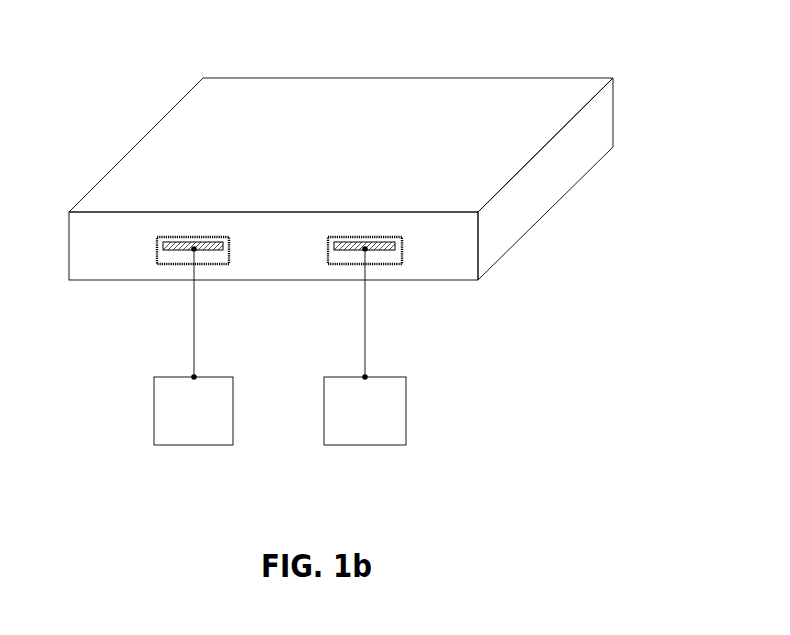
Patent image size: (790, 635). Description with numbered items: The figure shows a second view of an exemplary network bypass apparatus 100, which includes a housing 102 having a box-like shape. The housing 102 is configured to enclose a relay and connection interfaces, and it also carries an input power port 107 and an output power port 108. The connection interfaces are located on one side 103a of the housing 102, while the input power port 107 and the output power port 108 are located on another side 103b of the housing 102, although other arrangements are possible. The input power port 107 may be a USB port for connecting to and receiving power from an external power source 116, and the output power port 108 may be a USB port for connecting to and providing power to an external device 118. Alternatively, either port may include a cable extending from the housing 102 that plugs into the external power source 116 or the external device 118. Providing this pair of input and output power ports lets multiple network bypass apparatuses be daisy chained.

The network bypass apparatus 100 is at (366, 191).
The housing 102 is at (503, 93).
The one side of the housing 103a is at (616, 103).
The another side of the housing 103b is at (433, 273).
The input power port 107 is at (195, 237).
The output power port 108 is at (367, 238).
The external power source 116 is at (193, 348).
The external device 118 is at (365, 348).